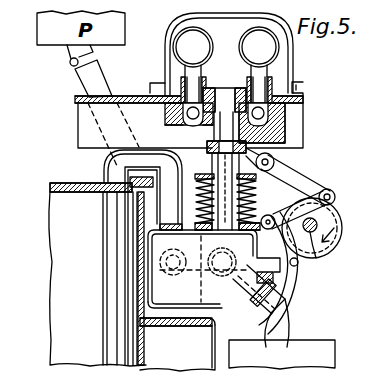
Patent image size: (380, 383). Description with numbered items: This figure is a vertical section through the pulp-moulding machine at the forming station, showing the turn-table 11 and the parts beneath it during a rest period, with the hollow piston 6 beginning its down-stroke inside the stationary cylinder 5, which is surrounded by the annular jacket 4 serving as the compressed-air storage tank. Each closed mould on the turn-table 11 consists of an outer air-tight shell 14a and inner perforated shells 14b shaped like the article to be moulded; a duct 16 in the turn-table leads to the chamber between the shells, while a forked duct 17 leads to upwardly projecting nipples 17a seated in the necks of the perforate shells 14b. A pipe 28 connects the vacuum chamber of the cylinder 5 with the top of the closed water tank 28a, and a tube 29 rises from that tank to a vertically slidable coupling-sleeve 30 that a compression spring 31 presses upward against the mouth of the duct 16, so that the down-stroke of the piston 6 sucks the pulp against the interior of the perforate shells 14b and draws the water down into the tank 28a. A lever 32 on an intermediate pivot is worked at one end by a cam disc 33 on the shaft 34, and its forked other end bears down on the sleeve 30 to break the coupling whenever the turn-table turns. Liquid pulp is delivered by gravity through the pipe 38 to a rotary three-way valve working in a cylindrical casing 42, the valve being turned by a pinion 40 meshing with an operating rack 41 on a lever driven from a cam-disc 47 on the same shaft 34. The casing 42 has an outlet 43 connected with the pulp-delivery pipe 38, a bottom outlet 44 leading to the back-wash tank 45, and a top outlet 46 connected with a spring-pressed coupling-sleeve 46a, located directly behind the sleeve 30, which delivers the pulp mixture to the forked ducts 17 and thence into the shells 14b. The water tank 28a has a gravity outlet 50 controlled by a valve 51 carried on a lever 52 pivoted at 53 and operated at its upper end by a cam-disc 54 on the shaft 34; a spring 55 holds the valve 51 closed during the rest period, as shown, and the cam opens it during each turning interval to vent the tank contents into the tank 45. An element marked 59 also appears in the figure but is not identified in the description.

The annular jacket 4 is at (208, 345).
The stationary cylinder 5 is at (68, 182).
The hollow piston 6 is at (62, 276).
The turn-table 11 is at (78, 100).
The outer air-tight shell 14a is at (173, 27).
The inner hollow shells 14b is at (211, 40).
The duct 16 is at (224, 100).
The forked duct 17 is at (205, 126).
The nipples 17a is at (193, 77).
The pipe 28 is at (143, 190).
The closed tank 28a is at (214, 269).
The tube 29 is at (204, 197).
The coupling-sleeve 30 is at (212, 162).
The compression spring 31 is at (204, 212).
The lever 32 is at (295, 171).
The cam disc 33 is at (330, 190).
The shaft 34 is at (320, 257).
The pipe 38 is at (106, 89).
The pinion 40 is at (222, 272).
The operating rack 41 is at (236, 209).
The cylindrical casing 42 is at (182, 308).
The outlet 43 is at (201, 263).
The bottom outlet 44 is at (248, 305).
The back-wash tank 45 is at (327, 351).
The top outlet 46 is at (216, 255).
The spring-pressed coupling-sleeve 46a is at (260, 214).
The cam-disc 47 is at (338, 207).
The gravity outlet 50 is at (253, 338).
The valve 51 is at (281, 331).
The lever 52 is at (290, 275).
The pivot 53 is at (268, 215).
The cam-disc 54 is at (336, 201).
The spring 55 is at (283, 298).
The wheel 59 is at (199, 258).